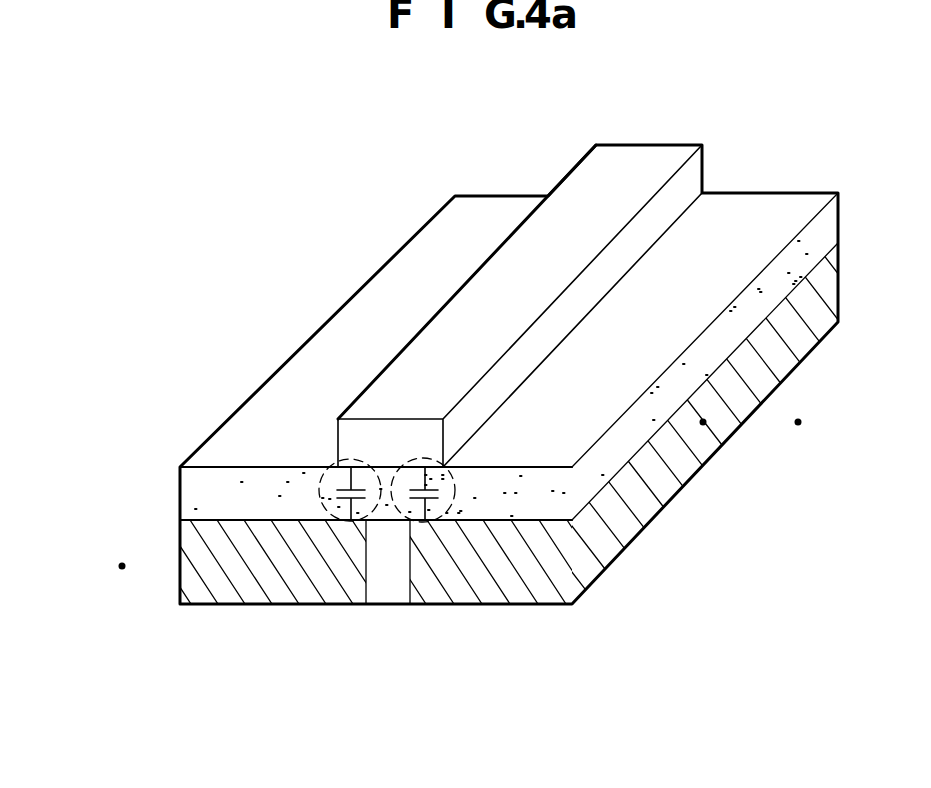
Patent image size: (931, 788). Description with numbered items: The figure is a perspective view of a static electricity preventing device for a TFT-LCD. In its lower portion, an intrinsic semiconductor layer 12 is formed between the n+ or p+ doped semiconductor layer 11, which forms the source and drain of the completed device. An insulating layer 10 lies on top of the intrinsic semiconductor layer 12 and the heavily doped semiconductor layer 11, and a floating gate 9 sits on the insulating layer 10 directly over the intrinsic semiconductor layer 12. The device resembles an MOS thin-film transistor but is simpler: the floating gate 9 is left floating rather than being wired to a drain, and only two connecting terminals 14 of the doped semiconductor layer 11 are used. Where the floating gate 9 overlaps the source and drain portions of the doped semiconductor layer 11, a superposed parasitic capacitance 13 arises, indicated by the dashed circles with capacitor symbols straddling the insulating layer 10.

The floating gate 9 is at (648, 157).
The insulating layer 10 is at (200, 497).
The doped semiconductor layer 11 is at (668, 477).
The intrinsic semiconductor layer 12 is at (389, 590).
The superposed parasitic capacitance 13 is at (342, 512).
The connecting terminals 14 is at (798, 422).